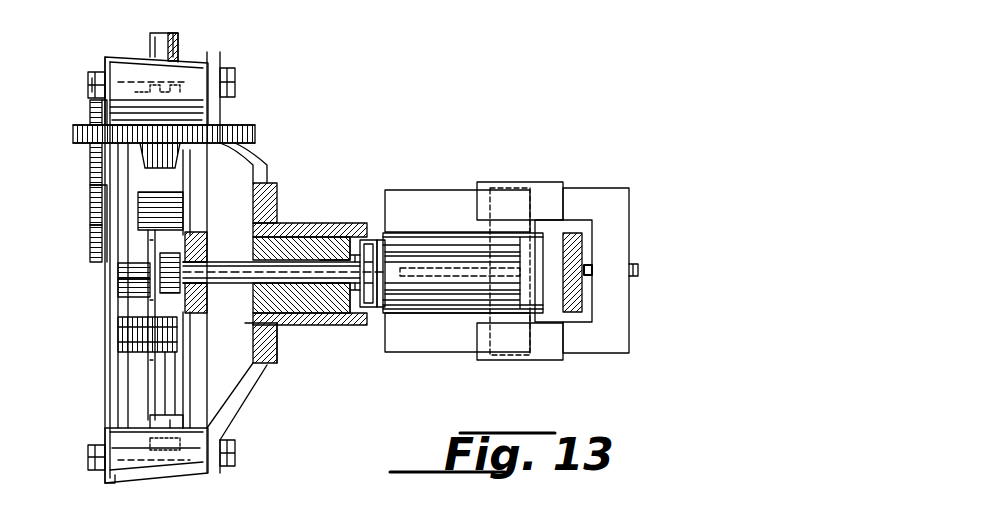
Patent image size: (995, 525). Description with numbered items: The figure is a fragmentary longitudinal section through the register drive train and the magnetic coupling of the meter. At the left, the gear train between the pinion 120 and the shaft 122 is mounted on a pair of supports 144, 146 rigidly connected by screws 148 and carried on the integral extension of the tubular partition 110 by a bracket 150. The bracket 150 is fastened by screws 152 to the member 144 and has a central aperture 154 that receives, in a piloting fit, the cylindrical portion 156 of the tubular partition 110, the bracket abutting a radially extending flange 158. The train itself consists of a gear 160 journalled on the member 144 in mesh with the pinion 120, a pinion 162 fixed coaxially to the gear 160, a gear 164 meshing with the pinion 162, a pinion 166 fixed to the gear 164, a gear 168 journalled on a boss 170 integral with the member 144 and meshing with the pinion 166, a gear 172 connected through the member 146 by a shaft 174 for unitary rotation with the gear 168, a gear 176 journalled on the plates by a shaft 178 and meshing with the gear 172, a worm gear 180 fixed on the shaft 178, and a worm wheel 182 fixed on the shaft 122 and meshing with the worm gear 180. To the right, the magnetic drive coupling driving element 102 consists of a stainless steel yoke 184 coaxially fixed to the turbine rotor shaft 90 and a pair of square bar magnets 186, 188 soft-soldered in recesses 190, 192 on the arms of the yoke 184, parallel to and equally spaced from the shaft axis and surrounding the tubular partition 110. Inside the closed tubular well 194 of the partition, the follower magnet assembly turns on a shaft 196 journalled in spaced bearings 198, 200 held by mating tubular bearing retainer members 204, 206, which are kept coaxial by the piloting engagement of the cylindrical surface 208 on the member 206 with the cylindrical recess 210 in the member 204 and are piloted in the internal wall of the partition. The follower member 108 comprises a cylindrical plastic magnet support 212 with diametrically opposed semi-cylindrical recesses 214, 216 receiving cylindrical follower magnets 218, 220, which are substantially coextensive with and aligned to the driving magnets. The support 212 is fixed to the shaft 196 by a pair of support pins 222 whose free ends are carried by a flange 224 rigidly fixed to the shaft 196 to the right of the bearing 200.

The turbine rotor shaft 90 is at (640, 270).
The magnetic drive coupling driving element 102 is at (400, 182).
The follower member 108 is at (430, 315).
The tubular partition 110 is at (378, 318).
The pinion 120 is at (178, 255).
The shaft 122 is at (178, 50).
The support 144 is at (122, 66).
The support 146 is at (110, 488).
The screws 148 is at (88, 82).
The bracket 150 is at (244, 425).
The screws 152 is at (235, 77).
The central aperture 154 is at (256, 345).
The cylindrical portion 156 is at (250, 323).
The radially extending flange 158 is at (277, 358).
The gear 160 is at (167, 400).
The pinion 162 is at (148, 352).
The gear 164 is at (148, 305).
The pinion 166 is at (118, 287).
The gear 168 is at (118, 272).
The boss 170 is at (183, 205).
The gear 172 is at (90, 240).
The shaft 174 is at (90, 210).
The gear 176 is at (90, 110).
The shaft 178 is at (90, 158).
The worm gear 180 is at (180, 160).
The worm wheel 182 is at (255, 135).
The stainless steel yoke 184 is at (615, 186).
The square bar magnet 186 is at (430, 195).
The square bar magnet 188 is at (390, 355).
The recess 190 is at (500, 186).
The recess 192 is at (500, 358).
The tubular well 194 is at (582, 243).
The shaft 196 is at (265, 276).
The bearing 198 is at (200, 248).
The bearing 200 is at (360, 245).
The tubular bearing retainer member 204 is at (285, 230).
The tubular bearing retainer member 206 is at (330, 238).
The cylindrical surface 208 is at (325, 312).
The cylindrical recess 210 is at (330, 293).
The cylindrical plastic magnet support 212 is at (582, 290).
The semi-cylindrical recess 214 is at (418, 256).
The semi-cylindrical recess 216 is at (410, 292).
The cylindrical follower magnet 218 is at (450, 248).
The cylindrical follower magnet 220 is at (475, 303).
The support pins 222 is at (472, 268).
The flange 224 is at (368, 240).